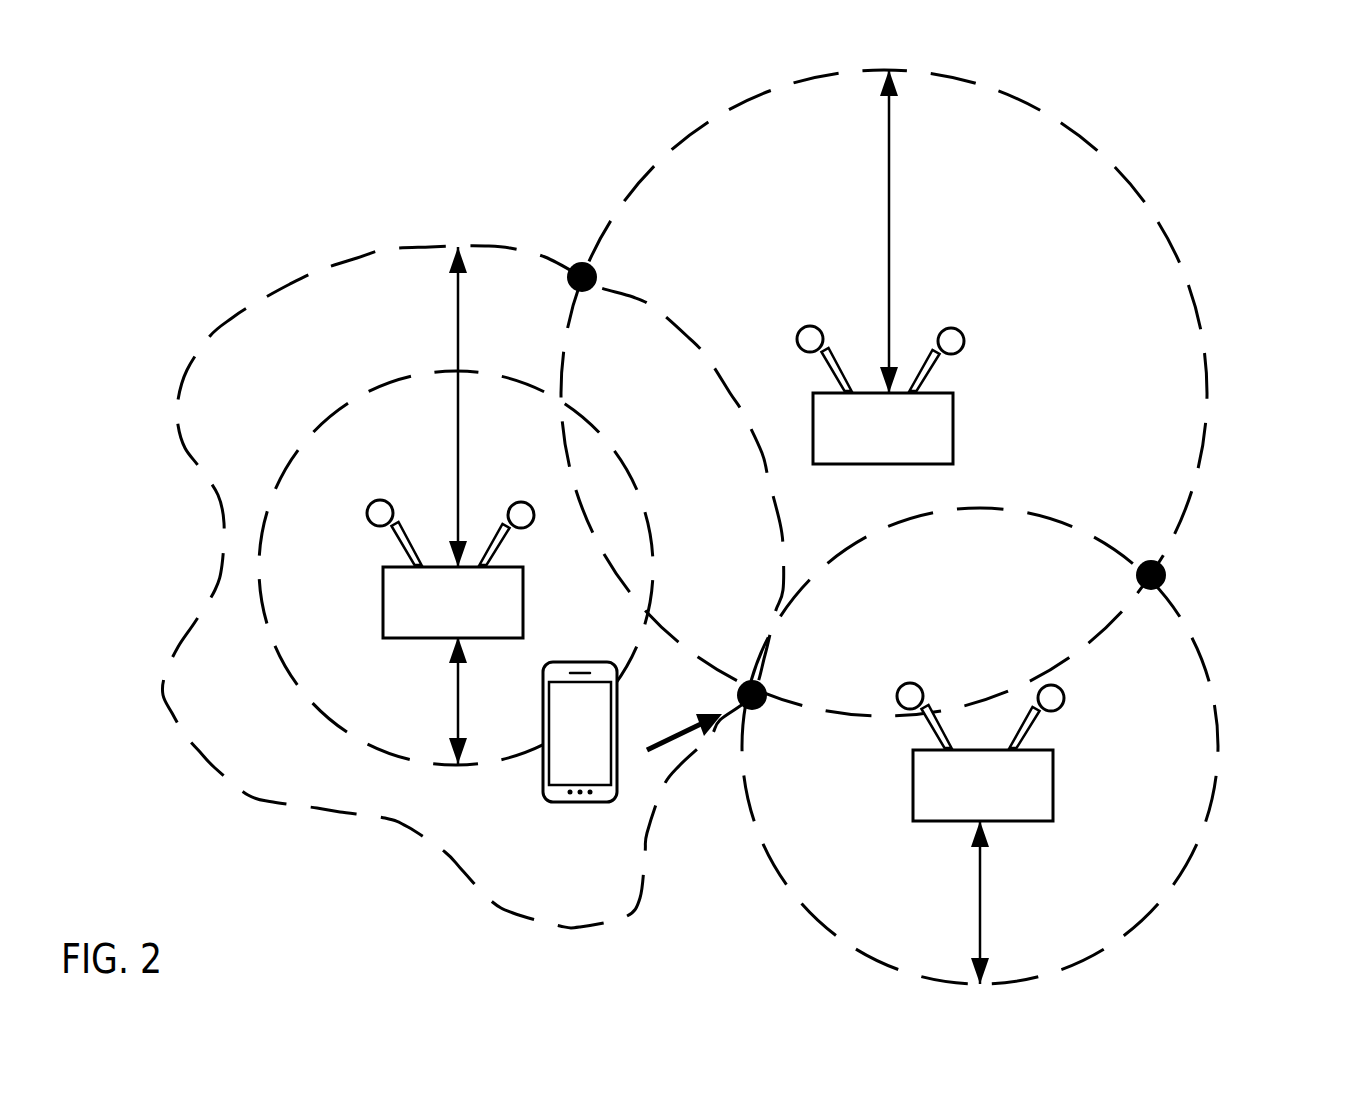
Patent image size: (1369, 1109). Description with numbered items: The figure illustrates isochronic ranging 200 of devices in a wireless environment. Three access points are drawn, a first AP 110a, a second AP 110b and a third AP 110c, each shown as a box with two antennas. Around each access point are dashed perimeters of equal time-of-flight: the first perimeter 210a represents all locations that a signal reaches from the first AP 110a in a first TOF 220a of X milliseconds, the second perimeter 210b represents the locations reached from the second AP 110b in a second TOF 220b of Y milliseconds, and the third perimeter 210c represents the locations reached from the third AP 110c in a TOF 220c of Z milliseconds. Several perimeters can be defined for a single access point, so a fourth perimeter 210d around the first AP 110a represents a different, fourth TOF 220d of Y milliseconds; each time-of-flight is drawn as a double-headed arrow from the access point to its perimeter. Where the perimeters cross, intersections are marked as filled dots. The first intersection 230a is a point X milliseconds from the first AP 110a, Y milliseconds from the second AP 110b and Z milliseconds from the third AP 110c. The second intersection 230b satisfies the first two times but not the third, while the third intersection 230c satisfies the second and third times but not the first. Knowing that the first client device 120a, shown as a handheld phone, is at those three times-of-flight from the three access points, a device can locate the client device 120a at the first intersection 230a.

The isochronic ranging 200 is at (1250, 167).
The first AP 110a is at (450, 569).
The second AP 110b is at (880, 395).
The third AP 110c is at (980, 752).
The first client device 120a is at (543, 783).
The first perimeter 210a is at (387, 247).
The second perimeter 210b is at (628, 189).
The third perimeter 210c is at (1217, 718).
The fourth perimeter 210d is at (318, 718).
The first TOF 220a is at (457, 343).
The second TOF 220b is at (890, 193).
The third TOF 220c is at (981, 890).
The fourth TOF 220d is at (457, 698).
The first intersection 230a is at (757, 708).
The second intersection 230b is at (585, 292).
The third intersection 230c is at (1166, 573).